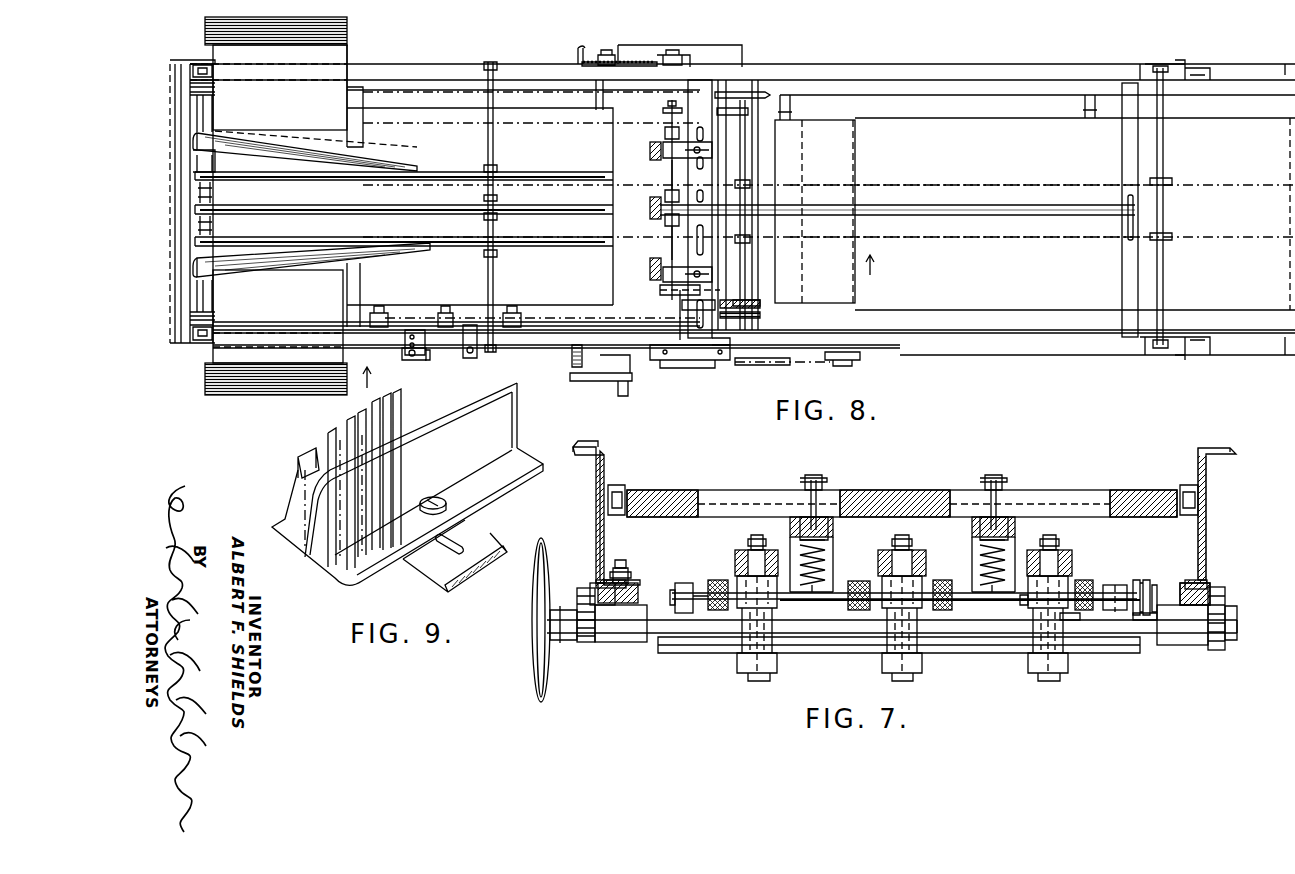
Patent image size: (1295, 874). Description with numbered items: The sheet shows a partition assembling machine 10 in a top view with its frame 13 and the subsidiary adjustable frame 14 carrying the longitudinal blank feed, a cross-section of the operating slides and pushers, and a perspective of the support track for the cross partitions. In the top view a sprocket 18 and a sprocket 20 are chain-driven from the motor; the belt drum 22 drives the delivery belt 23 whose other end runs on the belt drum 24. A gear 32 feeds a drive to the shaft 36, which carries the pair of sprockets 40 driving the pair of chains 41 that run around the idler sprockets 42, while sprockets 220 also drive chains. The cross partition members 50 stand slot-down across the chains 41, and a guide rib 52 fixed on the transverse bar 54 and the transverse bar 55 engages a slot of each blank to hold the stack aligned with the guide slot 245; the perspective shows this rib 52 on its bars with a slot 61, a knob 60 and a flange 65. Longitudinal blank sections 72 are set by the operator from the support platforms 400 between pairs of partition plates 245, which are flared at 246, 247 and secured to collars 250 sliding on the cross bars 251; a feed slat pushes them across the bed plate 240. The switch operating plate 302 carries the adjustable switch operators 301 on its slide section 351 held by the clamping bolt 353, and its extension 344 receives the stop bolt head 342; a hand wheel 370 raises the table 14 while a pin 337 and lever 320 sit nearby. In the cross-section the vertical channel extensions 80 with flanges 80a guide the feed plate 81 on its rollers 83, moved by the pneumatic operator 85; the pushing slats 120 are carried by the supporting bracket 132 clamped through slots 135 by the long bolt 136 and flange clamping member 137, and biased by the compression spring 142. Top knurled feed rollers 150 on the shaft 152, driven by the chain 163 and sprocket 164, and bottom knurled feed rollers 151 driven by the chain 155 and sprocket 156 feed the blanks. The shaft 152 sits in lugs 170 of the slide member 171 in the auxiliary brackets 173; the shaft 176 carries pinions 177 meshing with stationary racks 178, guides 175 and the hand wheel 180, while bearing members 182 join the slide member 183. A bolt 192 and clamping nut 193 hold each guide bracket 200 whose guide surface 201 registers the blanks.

In FIG. 8, the machine 10 is at (879, 265).
In FIG. 8, the frame 13 is at (980, 80).
In FIG. 8, the subsidiary adjustable frame 14 is at (786, 364).
In FIG. 8, the sprocket 18 is at (845, 362).
In FIG. 8, the sprocket 20 is at (705, 368).
In FIG. 8, the belt drum 22 is at (850, 290).
In FIG. 8, the delivery belt 23 is at (1075, 202).
In FIG. 8, the belt drum 24 is at (1290, 246).
In FIG. 8, the gear 32 is at (765, 310).
In FIG. 8, the shaft 36 is at (748, 265).
In FIG. 8, the sprockets 40 is at (746, 185).
In FIG. 8, the chains 41 is at (1073, 185).
In FIG. 8, the idler sprockets 42 is at (1172, 182).
In FIG. 9, the cross partition members 50 is at (400, 458).
In FIG. 8, the guide rib 52 is at (950, 198).
In FIG. 9, the guide rib 52 is at (480, 413).
In FIG. 8, the transverse bar 54 is at (1122, 278).
In FIG. 8, the transverse bar 55 is at (678, 380).
In FIG. 9, the transverse bar 55 is at (432, 580).
In FIG. 8, the knob 60 is at (703, 145).
In FIG. 9, the knob 60 is at (437, 497).
In FIG. 8, the slot 61 is at (710, 190).
In FIG. 9, the slot 61 is at (462, 538).
In FIG. 8, the flange 65 is at (1010, 204).
In FIG. 9, the flange 65 is at (517, 455).
In FIG. 8, the longitudinal blank sections 72 is at (350, 25).
In FIG. 7, the vertical channel extensions 80 is at (598, 520).
In FIG. 7, the frame flange 80a is at (593, 442).
In FIG. 7, the vertical feed plate 81 is at (690, 462).
In FIG. 7, the rollers 83 is at (620, 485).
In FIG. 7, the pneumatic operator 85 is at (625, 562).
In FIG. 7, the pushing slats 120 is at (805, 610).
In FIG. 7, the supporting bracket 132 is at (790, 515).
In FIG. 7, the slots 135 is at (733, 472).
In FIG. 7, the long bolt 136 is at (828, 492).
In FIG. 7, the flange clamping member 137 is at (820, 482).
In FIG. 7, the compression spring 142 is at (826, 545).
In FIG. 7, the top knurled feed rollers 150 is at (718, 580).
In FIG. 8, the bottom knurled feed rollers 151 is at (665, 132).
In FIG. 8, the shaft 152 is at (668, 104).
In FIG. 7, the shaft 152 is at (1024, 608).
In FIG. 8, the chain 155 is at (690, 312).
In FIG. 8, the sprocket 156 is at (668, 295).
In FIG. 7, the chain 163 is at (1133, 583).
In FIG. 7, the sprocket 164 is at (1140, 622).
In FIG. 7, the downwardly directed lugs 170 is at (718, 582).
In FIG. 7, the slide member 171 is at (683, 656).
In FIG. 7, the auxiliary brackets 173 is at (1072, 622).
In FIG. 7, the guides 175 is at (632, 575).
In FIG. 7, the shaft 176 is at (852, 634).
In FIG. 7, the pinions 177 is at (585, 643).
In FIG. 7, the stationary racks 178 is at (565, 598).
In FIG. 7, the hand wheel 180 is at (535, 690).
In FIG. 7, the bearing members 182 is at (628, 643).
In FIG. 7, the slide member 183 is at (632, 588).
In FIG. 7, the bolt 192 is at (758, 683).
In FIG. 7, the clamping nut 193 is at (766, 540).
In FIG. 8, the guide bracket 200 is at (650, 150).
In FIG. 7, the guide bracket 200 is at (738, 552).
In FIG. 8, the guide surface 201 is at (660, 195).
In FIG. 8, the sprockets 220 is at (768, 316).
In FIG. 8, the bed plate 240 is at (480, 186).
In FIG. 8, the partition plates 245 is at (470, 160).
In FIG. 8, the flared extension 246 is at (360, 160).
In FIG. 8, the flared extension 247 is at (378, 248).
In FIG. 8, the collars 250 is at (493, 166).
In FIG. 8, the cross bars 251 is at (488, 126).
In FIG. 8, the adjustable switch operators 301 is at (445, 310).
In FIG. 8, the switch operating plate 302 is at (548, 340).
In FIG. 8, the lever 320 is at (434, 360).
In FIG. 8, the pin 337 is at (412, 360).
In FIG. 8, the head of adjustable bolt 342 is at (477, 353).
In FIG. 8, the extension 344 is at (425, 342).
In FIG. 8, the slide section 351 is at (540, 320).
In FIG. 8, the clamping bolt 353 is at (382, 306).
In FIG. 8, the hand wheel 370 is at (601, 373).
In FIG. 8, the support platforms 400 is at (222, 52).